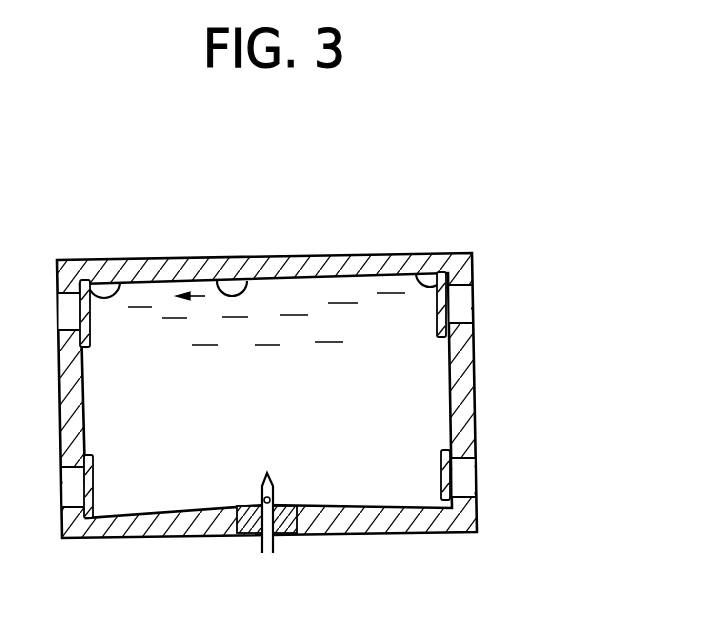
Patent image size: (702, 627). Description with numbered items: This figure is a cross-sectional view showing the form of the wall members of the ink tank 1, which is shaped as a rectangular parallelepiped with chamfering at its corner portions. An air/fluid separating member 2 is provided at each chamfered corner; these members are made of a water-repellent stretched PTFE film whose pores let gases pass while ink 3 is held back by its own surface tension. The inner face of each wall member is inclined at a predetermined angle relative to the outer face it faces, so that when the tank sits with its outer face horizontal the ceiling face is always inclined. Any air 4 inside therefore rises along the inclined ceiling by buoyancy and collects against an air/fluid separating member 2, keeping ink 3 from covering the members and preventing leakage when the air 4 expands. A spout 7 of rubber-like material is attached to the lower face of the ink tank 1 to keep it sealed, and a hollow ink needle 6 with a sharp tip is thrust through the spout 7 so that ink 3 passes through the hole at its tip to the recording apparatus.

The ink tank 1 is at (333, 236).
The air/fluid separating member 2 is at (450, 306).
The ink 3 is at (299, 426).
The air 4 is at (99, 287).
The ink needle 6 is at (261, 545).
The spout 7 is at (285, 534).